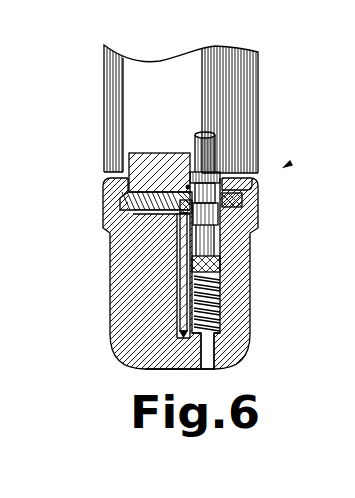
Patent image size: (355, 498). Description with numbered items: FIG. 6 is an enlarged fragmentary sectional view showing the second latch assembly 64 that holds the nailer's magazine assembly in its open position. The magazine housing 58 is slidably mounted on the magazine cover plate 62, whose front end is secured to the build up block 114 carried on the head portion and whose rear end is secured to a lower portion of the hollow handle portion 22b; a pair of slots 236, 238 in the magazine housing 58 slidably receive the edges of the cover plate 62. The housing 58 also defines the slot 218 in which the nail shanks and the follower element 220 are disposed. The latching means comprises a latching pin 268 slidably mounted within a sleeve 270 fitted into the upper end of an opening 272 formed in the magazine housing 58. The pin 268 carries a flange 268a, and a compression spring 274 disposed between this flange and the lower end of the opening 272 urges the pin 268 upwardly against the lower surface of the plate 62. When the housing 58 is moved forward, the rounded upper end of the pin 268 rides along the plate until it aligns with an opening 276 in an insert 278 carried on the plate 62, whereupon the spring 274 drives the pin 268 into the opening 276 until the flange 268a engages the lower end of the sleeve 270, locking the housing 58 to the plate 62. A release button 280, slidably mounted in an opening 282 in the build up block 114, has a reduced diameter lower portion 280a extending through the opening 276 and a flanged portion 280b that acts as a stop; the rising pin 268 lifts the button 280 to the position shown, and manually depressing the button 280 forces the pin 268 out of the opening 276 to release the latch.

The hollow handle portion 22b is at (257, 78).
The magazine housing 58 is at (118, 300).
The magazine cover plate 62 is at (105, 214).
The second latch assembly 64 is at (287, 164).
The build up block 114 is at (175, 152).
The slot 218 is at (165, 352).
The follower element 220 is at (176, 272).
The slot 236 is at (242, 201).
The slot 238 is at (125, 200).
The latching pin 268 is at (203, 238).
The flange 268a is at (222, 263).
The sleeve 270 is at (223, 218).
The opening 272 is at (222, 297).
The compression spring 274 is at (213, 325).
The opening 276 is at (240, 184).
The insert 278 is at (161, 223).
The release button 280 is at (200, 131).
The reduced diameter lower portion 280a is at (222, 182).
The flanged portion 280b is at (225, 170).
The opening 282 is at (188, 187).